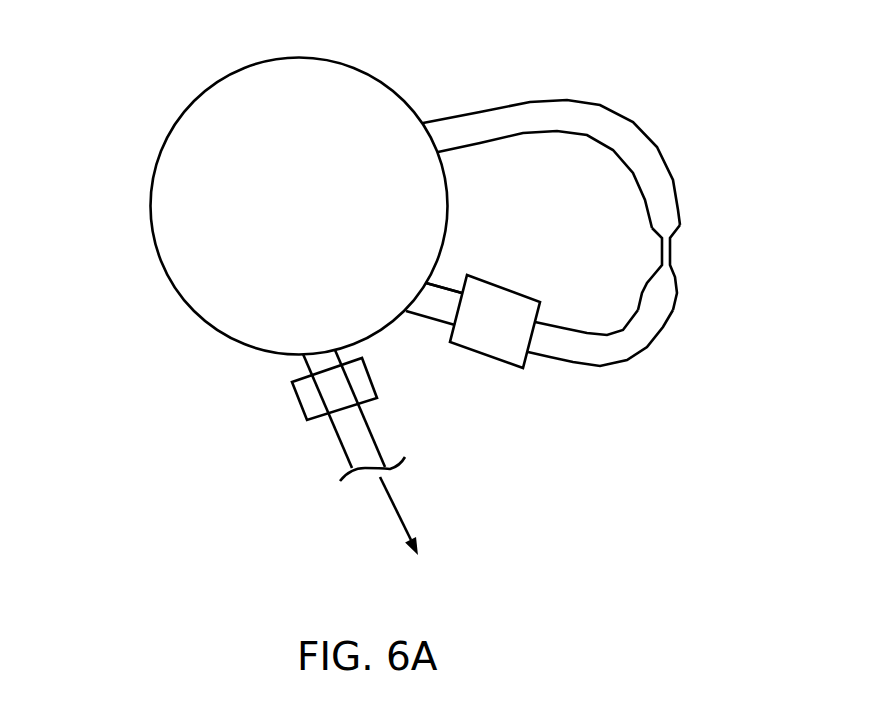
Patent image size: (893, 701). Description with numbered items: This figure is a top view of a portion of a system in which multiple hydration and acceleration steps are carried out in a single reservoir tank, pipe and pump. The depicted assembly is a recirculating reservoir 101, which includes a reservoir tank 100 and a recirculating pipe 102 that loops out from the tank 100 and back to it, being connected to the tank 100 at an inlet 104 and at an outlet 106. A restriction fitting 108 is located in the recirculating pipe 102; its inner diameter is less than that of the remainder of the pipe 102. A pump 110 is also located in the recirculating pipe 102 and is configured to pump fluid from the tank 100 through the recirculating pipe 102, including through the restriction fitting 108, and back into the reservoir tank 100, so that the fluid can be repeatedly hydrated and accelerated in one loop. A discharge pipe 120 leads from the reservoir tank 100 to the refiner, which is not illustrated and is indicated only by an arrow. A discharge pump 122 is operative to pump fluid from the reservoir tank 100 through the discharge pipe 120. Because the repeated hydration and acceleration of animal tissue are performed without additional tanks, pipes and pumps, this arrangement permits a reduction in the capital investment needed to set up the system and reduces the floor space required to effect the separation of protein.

The reservoir tank 100 is at (148, 207).
The recirculating reservoir 101 is at (184, 42).
The recirculating pipe 102 is at (445, 284).
The inlet 104 is at (407, 313).
The outlet 106 is at (427, 120).
The restriction fitting 108 is at (672, 253).
The pump 110 is at (505, 281).
The discharge pipe 120 is at (382, 447).
The discharge pump 122 is at (298, 400).